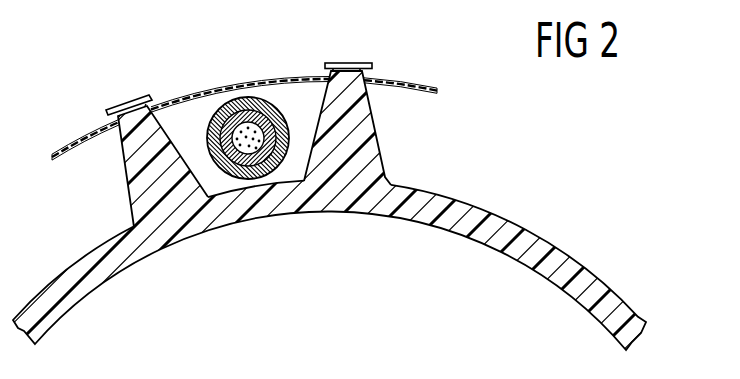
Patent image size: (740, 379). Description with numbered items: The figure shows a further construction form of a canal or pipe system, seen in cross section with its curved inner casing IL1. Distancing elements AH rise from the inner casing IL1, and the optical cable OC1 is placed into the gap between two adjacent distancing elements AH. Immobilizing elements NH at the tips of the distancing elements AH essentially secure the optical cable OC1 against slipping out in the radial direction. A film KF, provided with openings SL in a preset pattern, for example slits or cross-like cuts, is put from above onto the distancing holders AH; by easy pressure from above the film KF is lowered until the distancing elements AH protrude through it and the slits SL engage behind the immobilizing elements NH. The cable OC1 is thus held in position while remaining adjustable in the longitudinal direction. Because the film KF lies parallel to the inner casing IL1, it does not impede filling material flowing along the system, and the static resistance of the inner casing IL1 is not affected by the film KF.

The inner casing IL1 is at (546, 240).
The distancing element AH is at (129, 203).
The immobilizing element NH is at (112, 112).
The opening SL is at (374, 74).
The film KF is at (268, 79).
The optical cable OC1 is at (198, 116).